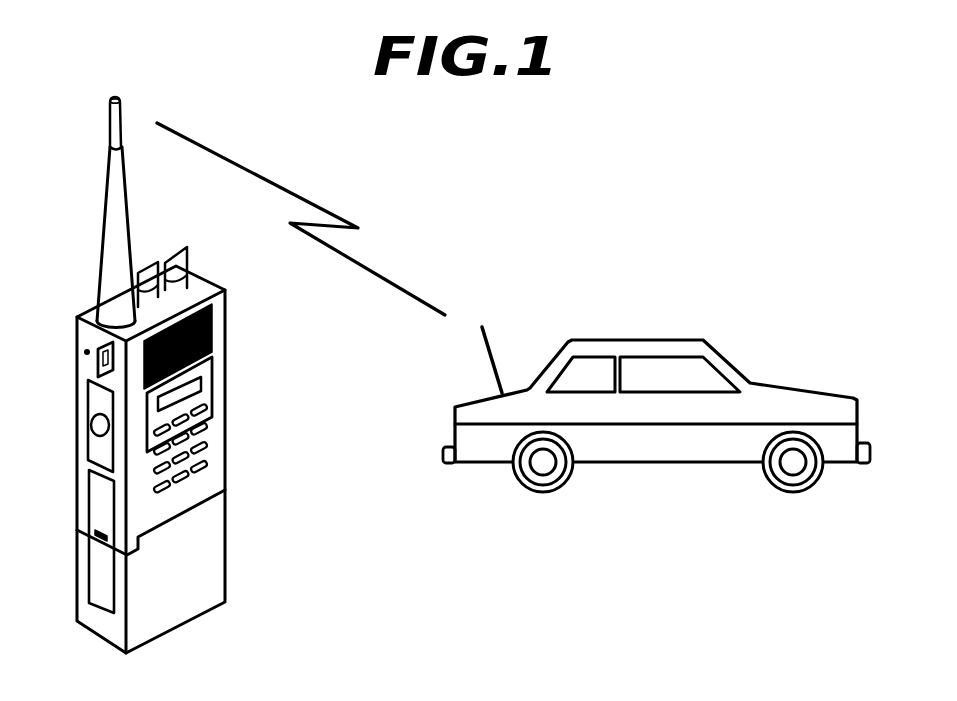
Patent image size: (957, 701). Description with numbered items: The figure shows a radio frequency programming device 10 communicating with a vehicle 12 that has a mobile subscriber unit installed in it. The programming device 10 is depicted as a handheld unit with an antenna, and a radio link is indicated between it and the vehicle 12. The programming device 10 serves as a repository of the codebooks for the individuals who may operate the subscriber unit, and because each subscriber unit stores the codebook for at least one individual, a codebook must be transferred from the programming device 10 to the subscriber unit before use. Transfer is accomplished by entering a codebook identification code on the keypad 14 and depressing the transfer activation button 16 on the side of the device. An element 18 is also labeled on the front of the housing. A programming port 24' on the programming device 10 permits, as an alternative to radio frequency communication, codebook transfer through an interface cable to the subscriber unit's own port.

The radio frequency programming device 10 is at (300, 589).
The vehicle 12 is at (692, 557).
The keypad 14 is at (217, 453).
The transfer activation button 16 is at (92, 428).
The speaker grille 18 is at (213, 340).
The programming port 24' is at (66, 328).